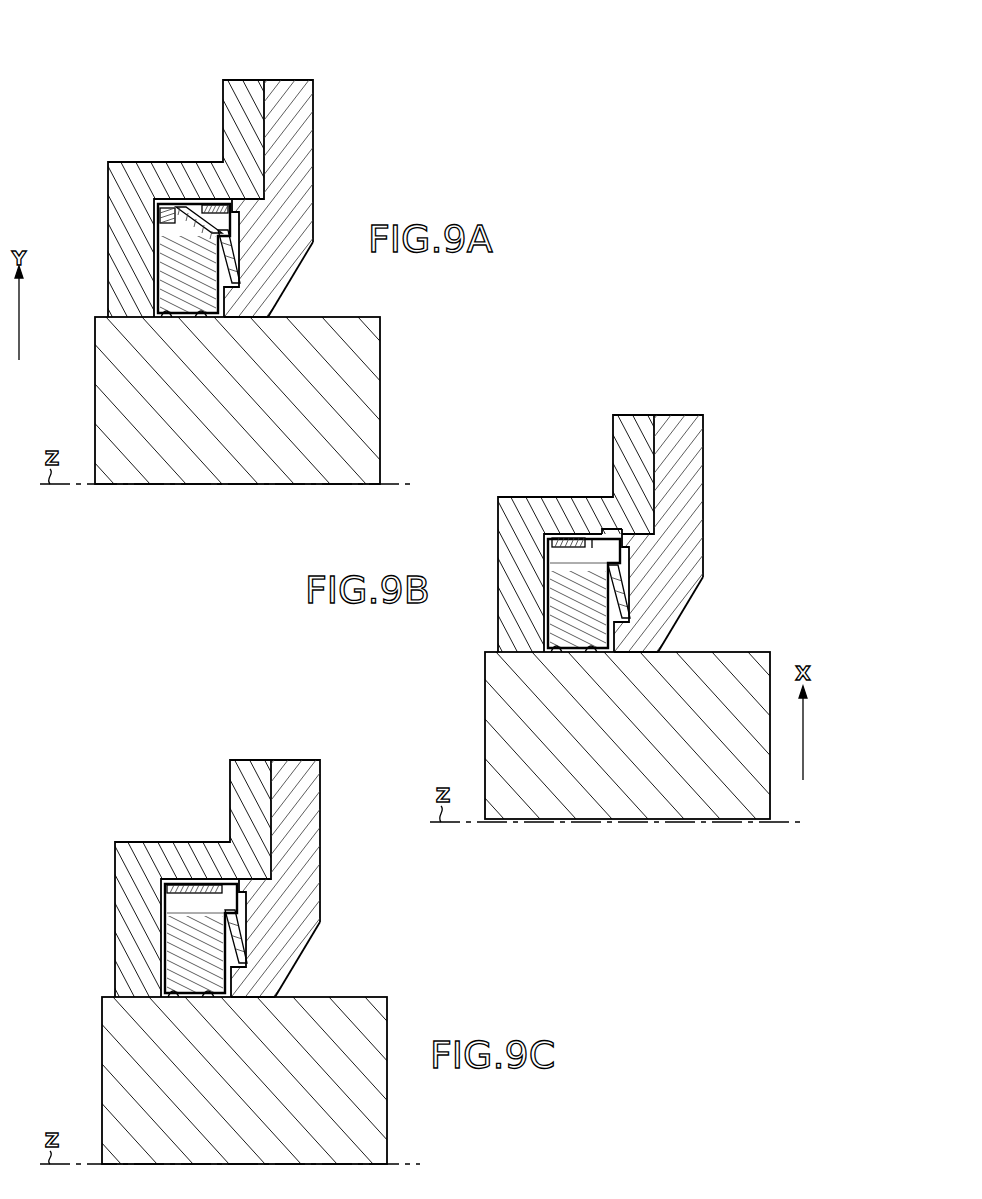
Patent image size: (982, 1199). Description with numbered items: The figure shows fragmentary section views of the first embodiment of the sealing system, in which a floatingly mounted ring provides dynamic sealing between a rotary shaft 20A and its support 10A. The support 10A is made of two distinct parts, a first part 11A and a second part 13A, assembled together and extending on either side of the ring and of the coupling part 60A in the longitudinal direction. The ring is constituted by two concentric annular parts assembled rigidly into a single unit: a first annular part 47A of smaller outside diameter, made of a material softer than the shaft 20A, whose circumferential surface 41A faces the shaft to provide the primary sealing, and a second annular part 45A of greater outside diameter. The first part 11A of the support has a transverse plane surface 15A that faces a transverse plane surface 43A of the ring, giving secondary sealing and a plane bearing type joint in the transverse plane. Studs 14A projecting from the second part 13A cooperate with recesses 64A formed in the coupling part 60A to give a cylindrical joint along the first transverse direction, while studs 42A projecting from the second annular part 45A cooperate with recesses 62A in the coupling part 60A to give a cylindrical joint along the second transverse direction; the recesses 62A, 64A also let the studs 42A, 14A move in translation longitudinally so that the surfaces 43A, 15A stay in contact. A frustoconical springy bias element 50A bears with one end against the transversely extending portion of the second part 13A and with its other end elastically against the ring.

In FIG. 9A, the support 10A is at (313, 50).
In FIG. 9B, the support 10A is at (620, 499).
In FIG. 9C, the support 10A is at (249, 843).
In FIG. 9A, the first part of the support 11A is at (240, 96).
In FIG. 9B, the first part of the support 11A is at (567, 516).
In FIG. 9C, the first part of the support 11A is at (195, 861).
In FIG. 9A, the second part of the support 13A is at (288, 98).
In FIG. 9B, the second part of the support 13A is at (655, 516).
In FIG. 9C, the second part of the support 13A is at (272, 861).
In FIG. 9B, the stud 14A is at (597, 493).
In FIG. 9A, the transverse plane surface 15A is at (158, 276).
In FIG. 9B, the transverse plane surface 15A is at (536, 590).
In FIG. 9C, the transverse plane surface 15A is at (151, 938).
In FIG. 9A, the shaft 20A is at (110, 403).
In FIG. 9B, the shaft 20A is at (626, 735).
In FIG. 9C, the shaft 20A is at (258, 1080).
In FIG. 9A, the circumferential surface 41A is at (197, 319).
In FIG. 9B, the circumferential surface 41A is at (611, 675).
In FIG. 9C, the circumferential surface 41A is at (228, 1018).
In FIG. 9A, the stud 42A is at (191, 209).
In FIG. 9A, the transverse plane surface 43A is at (160, 319).
In FIG. 9B, the transverse plane surface 43A is at (556, 675).
In FIG. 9C, the transverse plane surface 43A is at (172, 1018).
In FIG. 9A, the second annular part 45A is at (168, 232).
In FIG. 9B, the second annular part 45A is at (531, 592).
In FIG. 9C, the second annular part 45A is at (146, 937).
In FIG. 9A, the first annular part 47A is at (180, 277).
In FIG. 9B, the first annular part 47A is at (538, 597).
In FIG. 9C, the first annular part 47A is at (153, 942).
In FIG. 9A, the bias element 50A is at (241, 268).
In FIG. 9B, the bias element 50A is at (693, 614).
In FIG. 9C, the bias element 50A is at (310, 959).
In FIG. 9C, the coupling part 60A is at (189, 848).
In FIG. 9A, the recess 62A is at (160, 206).
In FIG. 9B, the recess 64A is at (557, 500).